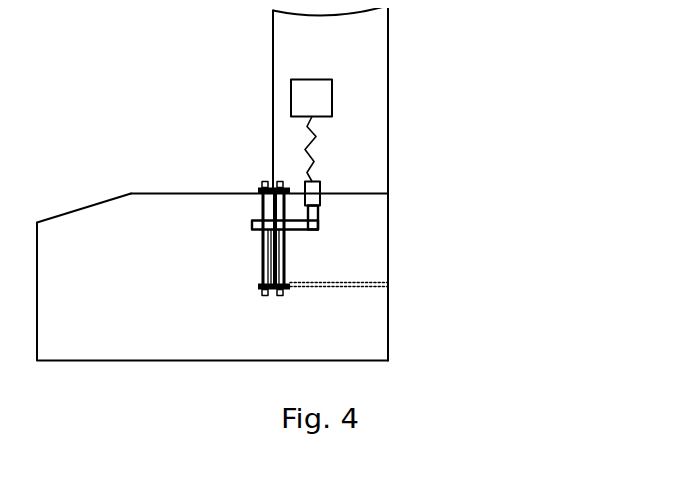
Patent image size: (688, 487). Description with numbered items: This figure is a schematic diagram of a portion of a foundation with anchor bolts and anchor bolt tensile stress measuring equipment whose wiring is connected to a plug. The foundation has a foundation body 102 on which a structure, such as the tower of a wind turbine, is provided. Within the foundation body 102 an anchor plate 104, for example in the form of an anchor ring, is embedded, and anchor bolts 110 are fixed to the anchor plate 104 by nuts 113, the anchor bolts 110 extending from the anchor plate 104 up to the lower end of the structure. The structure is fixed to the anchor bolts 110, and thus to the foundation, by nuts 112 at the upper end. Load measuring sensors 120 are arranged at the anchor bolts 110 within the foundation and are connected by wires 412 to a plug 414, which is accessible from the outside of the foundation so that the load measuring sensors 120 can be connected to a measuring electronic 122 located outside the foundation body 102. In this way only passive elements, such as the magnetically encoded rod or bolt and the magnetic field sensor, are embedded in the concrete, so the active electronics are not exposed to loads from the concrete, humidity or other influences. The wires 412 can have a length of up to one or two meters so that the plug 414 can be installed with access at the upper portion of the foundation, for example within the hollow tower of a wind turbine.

The foundation body 102 is at (88, 216).
The anchor plate 104 is at (308, 287).
The anchor bolts 110 is at (376, 103).
The nuts 112 is at (266, 182).
The nuts 113 is at (258, 291).
The load measuring sensors 120 is at (262, 256).
The measuring electronic 122 is at (318, 79).
The wires 412 is at (252, 226).
The plug 414 is at (308, 200).